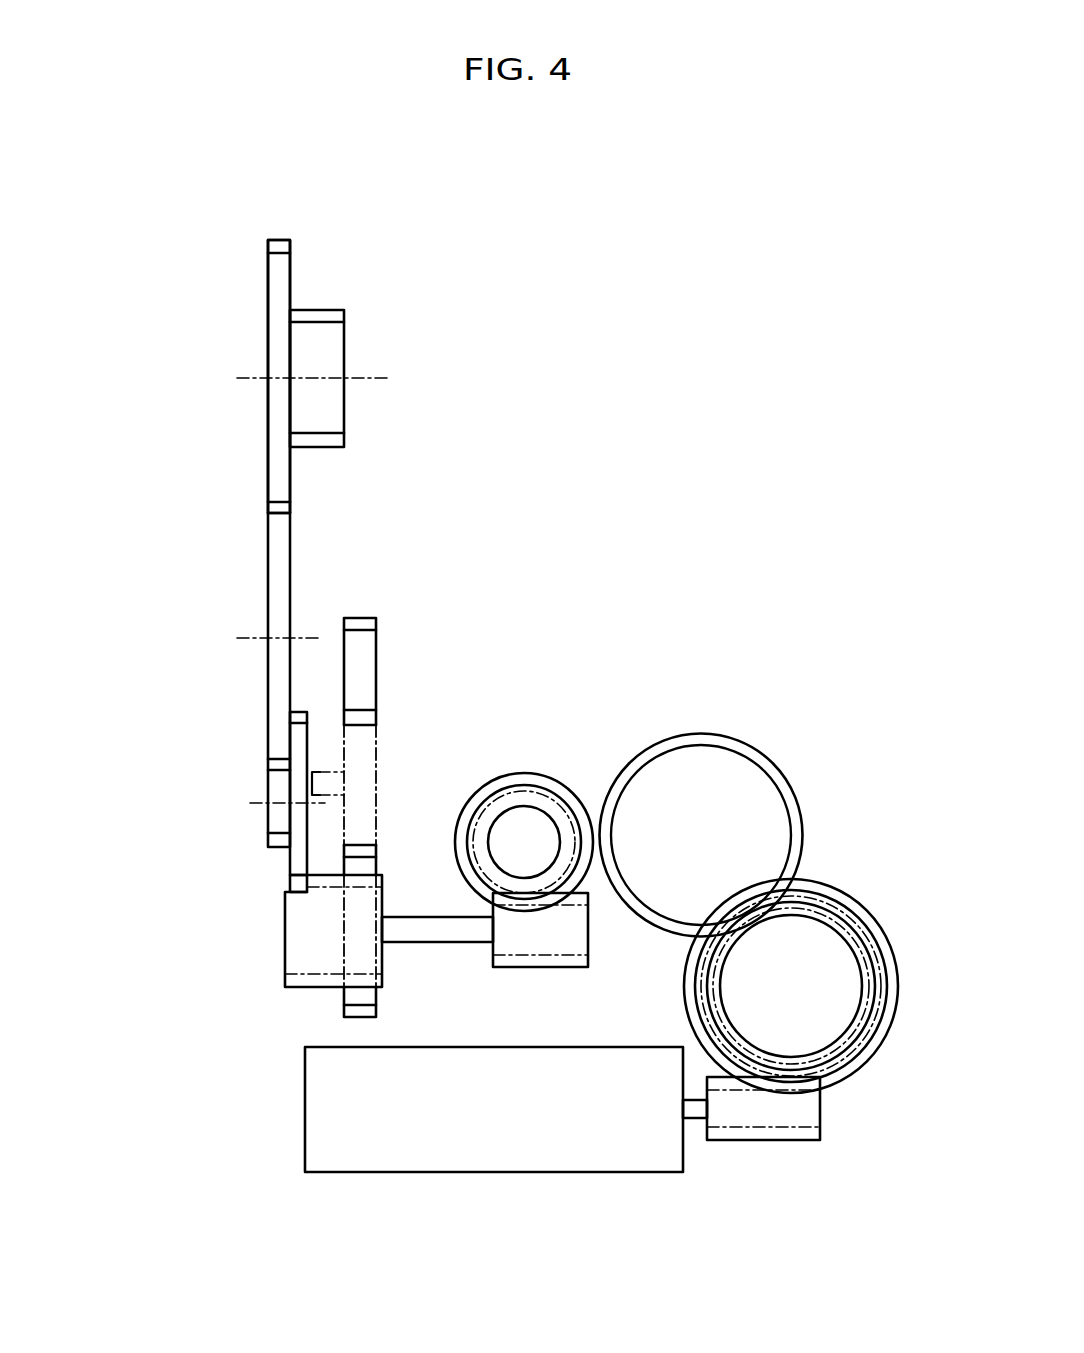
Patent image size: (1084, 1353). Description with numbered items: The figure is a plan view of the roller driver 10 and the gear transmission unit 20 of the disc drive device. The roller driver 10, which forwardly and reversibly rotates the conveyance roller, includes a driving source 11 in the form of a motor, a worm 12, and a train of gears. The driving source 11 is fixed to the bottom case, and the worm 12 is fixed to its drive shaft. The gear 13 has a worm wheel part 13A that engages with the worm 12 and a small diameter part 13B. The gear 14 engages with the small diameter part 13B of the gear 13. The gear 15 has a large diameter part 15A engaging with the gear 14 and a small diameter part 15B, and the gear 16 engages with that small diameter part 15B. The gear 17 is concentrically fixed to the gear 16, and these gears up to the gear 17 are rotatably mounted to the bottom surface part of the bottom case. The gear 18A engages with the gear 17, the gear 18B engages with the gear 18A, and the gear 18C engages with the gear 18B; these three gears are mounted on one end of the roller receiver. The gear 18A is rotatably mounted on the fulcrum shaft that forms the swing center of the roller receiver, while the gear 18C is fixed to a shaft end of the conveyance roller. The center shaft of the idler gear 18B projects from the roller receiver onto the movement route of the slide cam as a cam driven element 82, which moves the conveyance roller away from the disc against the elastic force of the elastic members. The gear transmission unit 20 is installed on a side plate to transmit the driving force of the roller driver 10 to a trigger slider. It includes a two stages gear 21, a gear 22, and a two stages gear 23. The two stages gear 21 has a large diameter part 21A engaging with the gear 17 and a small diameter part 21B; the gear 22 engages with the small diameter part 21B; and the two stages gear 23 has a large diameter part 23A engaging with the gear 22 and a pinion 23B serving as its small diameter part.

The roller driver 10 is at (634, 652).
The driving source 11 is at (483, 1140).
The worm 12 is at (770, 1140).
The gear 13 is at (945, 827).
The worm wheel part 13A is at (840, 906).
The small diameter part 13B is at (862, 948).
The gear 14 is at (763, 755).
The gear 15 is at (568, 705).
The large diameter part 15A is at (486, 790).
The small diameter part 15B is at (538, 796).
The gear 16 is at (539, 967).
The gear 17 is at (285, 932).
The gear 18A is at (344, 1003).
The gear 18B is at (342, 755).
The gear 18C is at (360, 618).
The gear transmission unit 20 is at (173, 462).
The two stages gear 21 is at (135, 790).
The large diameter part 21A is at (285, 868).
The small diameter part 21B is at (268, 818).
The gear 22 is at (268, 577).
The two stages gear 23 is at (462, 227).
The large diameter part 23A is at (292, 275).
The pinion 23B is at (344, 312).
The cam driven element 82 is at (312, 778).